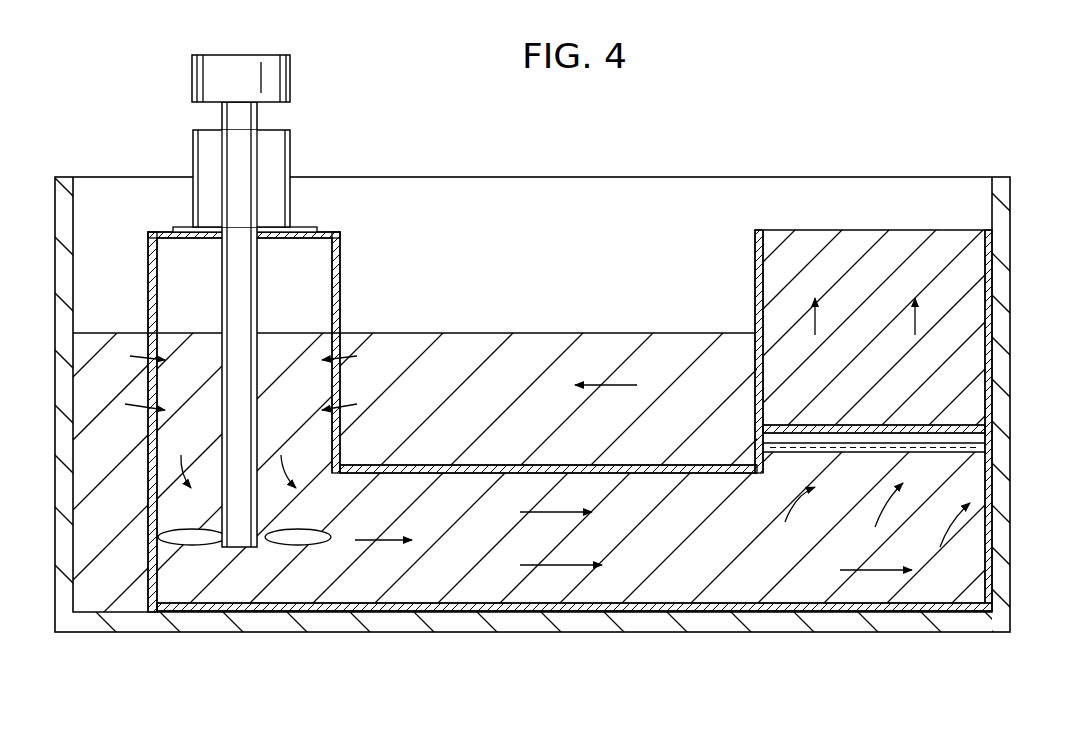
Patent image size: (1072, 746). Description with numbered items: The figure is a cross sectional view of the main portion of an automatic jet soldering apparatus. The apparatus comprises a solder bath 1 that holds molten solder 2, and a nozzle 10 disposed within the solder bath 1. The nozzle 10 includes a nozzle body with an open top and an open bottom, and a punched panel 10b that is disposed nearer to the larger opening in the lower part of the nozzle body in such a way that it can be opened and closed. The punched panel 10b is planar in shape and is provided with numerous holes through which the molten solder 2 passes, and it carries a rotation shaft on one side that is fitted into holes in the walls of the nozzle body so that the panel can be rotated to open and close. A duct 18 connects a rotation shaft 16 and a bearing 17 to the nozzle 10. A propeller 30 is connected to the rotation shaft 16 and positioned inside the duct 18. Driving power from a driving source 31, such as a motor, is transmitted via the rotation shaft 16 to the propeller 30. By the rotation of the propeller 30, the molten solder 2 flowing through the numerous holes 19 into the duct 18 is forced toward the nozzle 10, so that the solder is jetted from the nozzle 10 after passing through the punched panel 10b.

The solder bath 1 is at (63, 585).
The molten solder 2 is at (672, 357).
The nozzle 10 is at (970, 307).
The punched panel 10b is at (993, 432).
The rotation shaft 16 is at (260, 115).
The bearing 17 is at (207, 195).
The duct 18 is at (668, 587).
The holes 19 is at (148, 258).
The propeller 30 is at (297, 538).
The driving source 31 is at (253, 80).